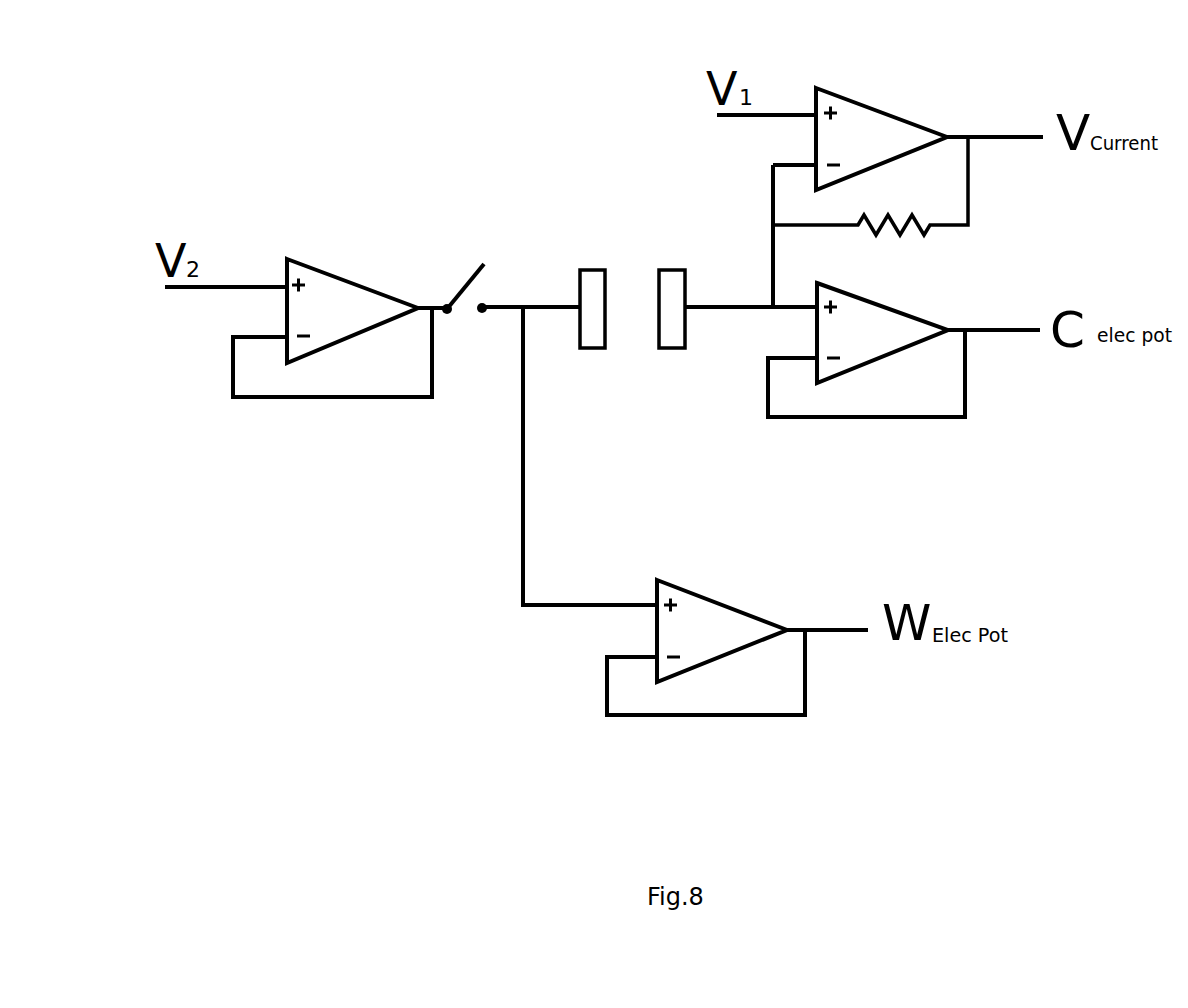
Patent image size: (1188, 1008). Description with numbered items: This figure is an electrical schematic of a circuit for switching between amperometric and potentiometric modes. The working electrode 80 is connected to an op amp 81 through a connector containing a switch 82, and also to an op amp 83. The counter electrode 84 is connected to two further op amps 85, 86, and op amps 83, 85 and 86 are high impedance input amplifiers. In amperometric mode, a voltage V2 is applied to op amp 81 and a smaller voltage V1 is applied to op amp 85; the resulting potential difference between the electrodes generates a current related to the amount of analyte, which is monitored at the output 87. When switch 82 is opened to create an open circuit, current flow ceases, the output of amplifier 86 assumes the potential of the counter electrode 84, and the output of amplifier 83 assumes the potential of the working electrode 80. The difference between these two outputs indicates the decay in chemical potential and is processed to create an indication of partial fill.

The working electrode 80 is at (594, 298).
The op amp 81 is at (338, 305).
The switch 82 is at (450, 296).
The op amp 83 is at (715, 632).
The counter electrode 84 is at (681, 325).
The op amp 85 is at (880, 133).
The op amp 86 is at (878, 338).
The output 87 is at (992, 130).